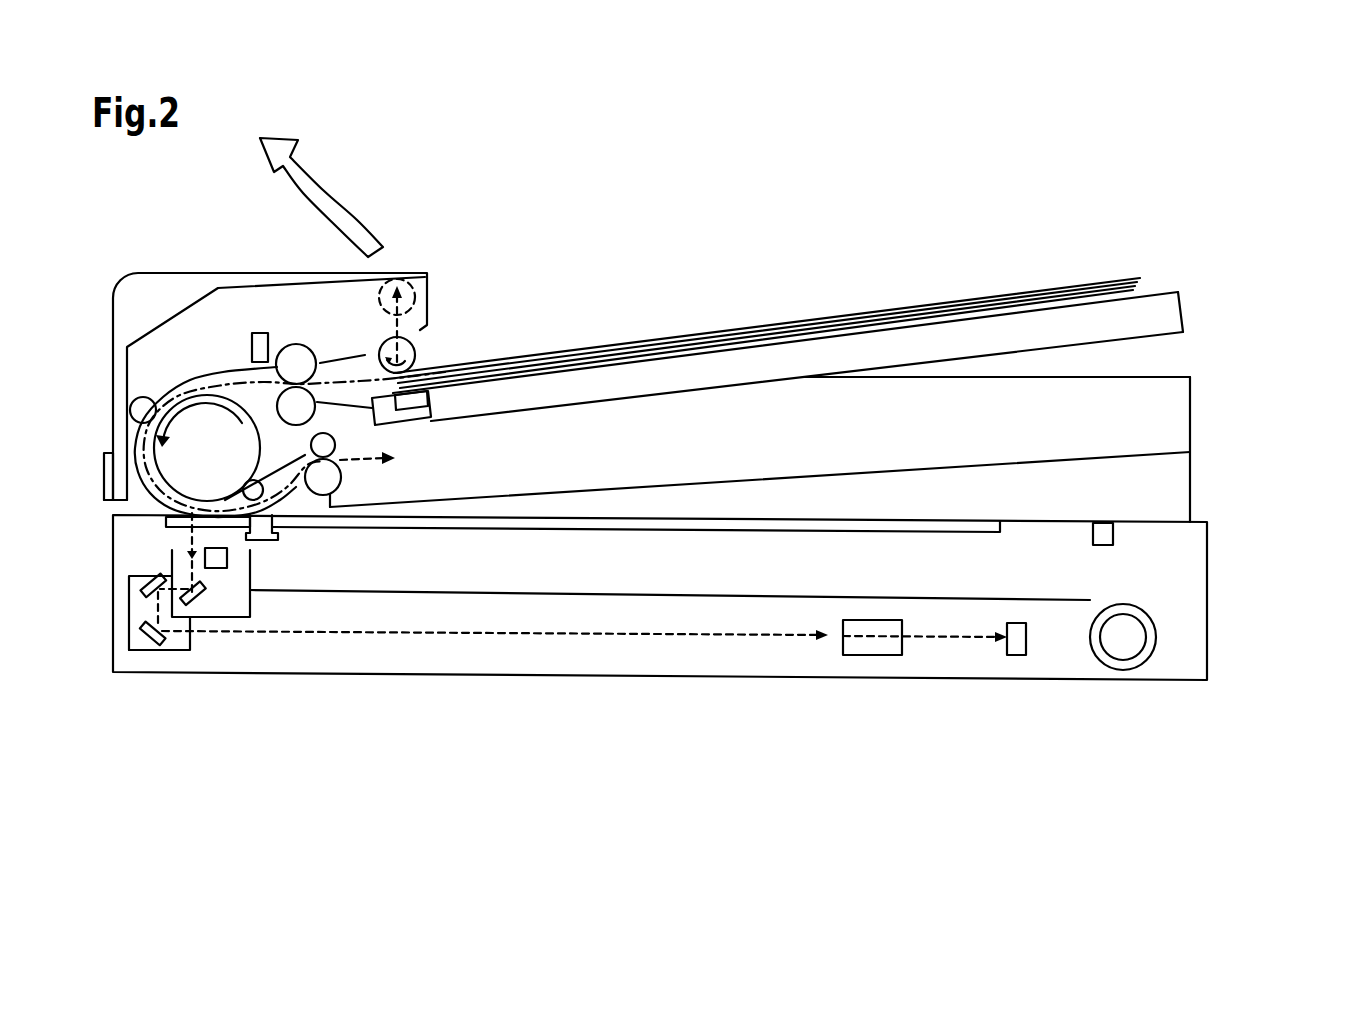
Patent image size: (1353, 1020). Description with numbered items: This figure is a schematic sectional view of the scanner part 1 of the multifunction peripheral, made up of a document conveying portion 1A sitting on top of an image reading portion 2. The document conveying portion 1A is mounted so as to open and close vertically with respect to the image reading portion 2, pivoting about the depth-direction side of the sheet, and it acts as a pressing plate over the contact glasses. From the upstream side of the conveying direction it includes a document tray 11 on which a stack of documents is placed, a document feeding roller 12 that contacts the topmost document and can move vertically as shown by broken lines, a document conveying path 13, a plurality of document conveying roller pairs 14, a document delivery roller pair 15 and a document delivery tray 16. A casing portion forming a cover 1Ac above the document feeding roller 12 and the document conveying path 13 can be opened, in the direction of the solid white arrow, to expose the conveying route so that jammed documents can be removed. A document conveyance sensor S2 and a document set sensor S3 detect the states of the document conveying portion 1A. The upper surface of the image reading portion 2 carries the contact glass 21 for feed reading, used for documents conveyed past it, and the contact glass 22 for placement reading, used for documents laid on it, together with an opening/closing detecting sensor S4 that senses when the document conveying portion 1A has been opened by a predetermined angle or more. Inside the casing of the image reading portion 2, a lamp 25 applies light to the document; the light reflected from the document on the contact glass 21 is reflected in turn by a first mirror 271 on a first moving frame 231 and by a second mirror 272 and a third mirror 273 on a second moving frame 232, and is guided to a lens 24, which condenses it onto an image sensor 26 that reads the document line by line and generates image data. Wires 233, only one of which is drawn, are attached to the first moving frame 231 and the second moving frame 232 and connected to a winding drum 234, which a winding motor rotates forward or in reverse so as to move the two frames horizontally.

The scanner part 1 is at (877, 427).
The document conveying portion 1A is at (1208, 431).
The cover 1Ac is at (172, 282).
The image reading portion 2 is at (1216, 627).
The document tray 11 is at (1163, 323).
The document feeding roller 12 is at (416, 294).
The document conveying path 13 is at (215, 375).
The document conveying roller pairs 14 is at (300, 356).
The document delivery roller pair 15 is at (341, 478).
The document delivery tray 16 is at (617, 486).
The contact glass for feed reading 21 is at (165, 521).
The contact glass for placement reading 22 is at (771, 526).
The lens 24 is at (871, 657).
The lamp 25 is at (228, 559).
The image sensor 26 is at (1014, 657).
The first moving frame 231 is at (172, 562).
The second moving frame 232 is at (128, 637).
The wires 233 is at (853, 598).
The winding drum 234 is at (1135, 604).
The first mirror 271 is at (206, 597).
The second mirror 272 is at (141, 587).
The third mirror 273 is at (155, 648).
The document conveyance sensor S2 is at (260, 333).
The document set sensor S3 is at (423, 399).
The opening/closing detecting sensor S4 is at (1103, 528).